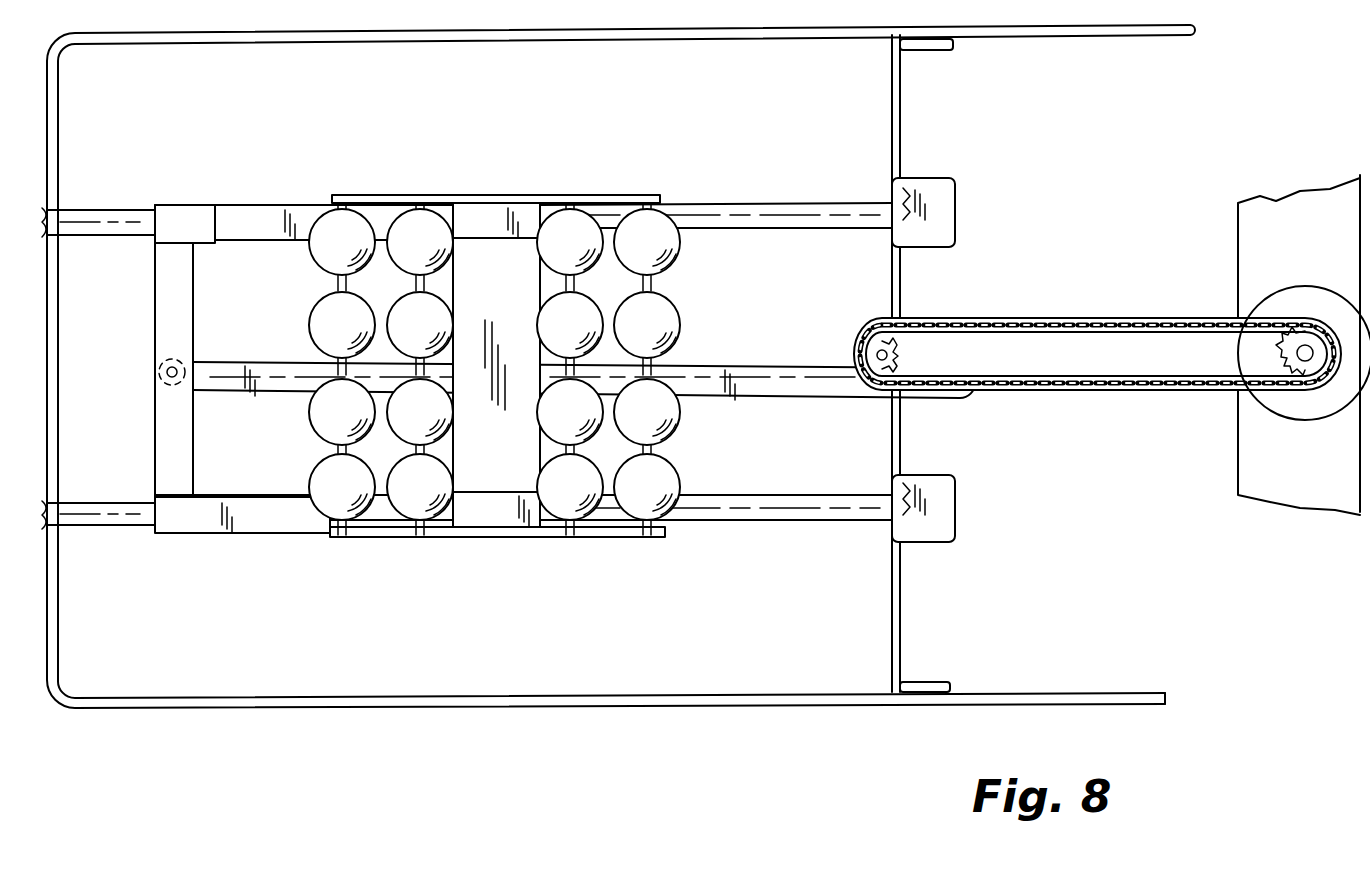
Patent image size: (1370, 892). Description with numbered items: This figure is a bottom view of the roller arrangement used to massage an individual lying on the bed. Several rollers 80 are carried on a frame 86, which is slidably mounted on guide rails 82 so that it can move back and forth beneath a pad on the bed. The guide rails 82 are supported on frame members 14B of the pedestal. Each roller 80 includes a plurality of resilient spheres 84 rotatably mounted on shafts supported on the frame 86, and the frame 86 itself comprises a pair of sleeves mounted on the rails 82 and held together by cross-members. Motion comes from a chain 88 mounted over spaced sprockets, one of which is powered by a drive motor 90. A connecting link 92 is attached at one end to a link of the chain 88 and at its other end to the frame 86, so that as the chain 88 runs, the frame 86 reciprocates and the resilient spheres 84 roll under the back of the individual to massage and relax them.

The roller 80 is at (425, 128).
The guide rails 82 is at (786, 160).
The resilient spheres 84 is at (325, 258).
The frame 86 is at (627, 172).
The chain 88 is at (1135, 320).
The drive motor 90 is at (1310, 292).
The connecting link 92 is at (776, 378).
The frame members 14B is at (58, 601).